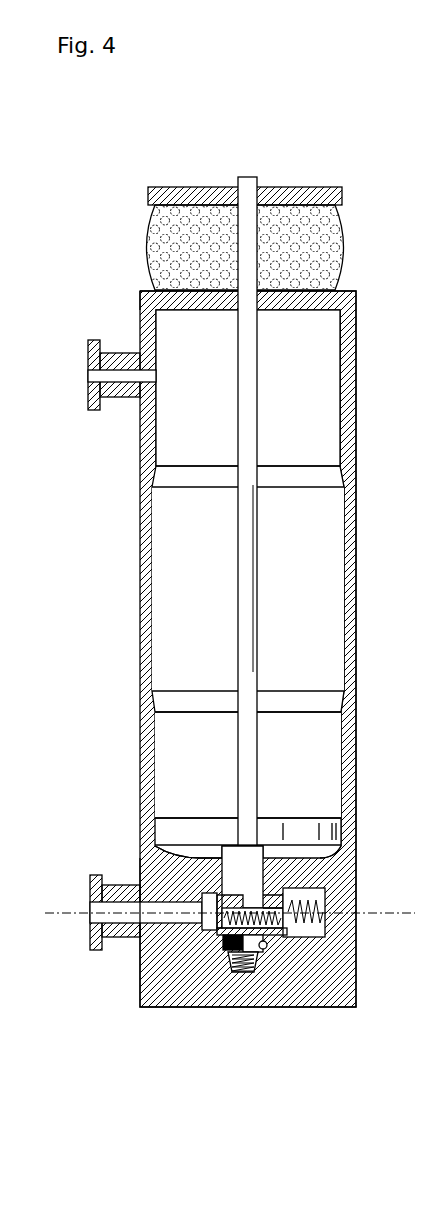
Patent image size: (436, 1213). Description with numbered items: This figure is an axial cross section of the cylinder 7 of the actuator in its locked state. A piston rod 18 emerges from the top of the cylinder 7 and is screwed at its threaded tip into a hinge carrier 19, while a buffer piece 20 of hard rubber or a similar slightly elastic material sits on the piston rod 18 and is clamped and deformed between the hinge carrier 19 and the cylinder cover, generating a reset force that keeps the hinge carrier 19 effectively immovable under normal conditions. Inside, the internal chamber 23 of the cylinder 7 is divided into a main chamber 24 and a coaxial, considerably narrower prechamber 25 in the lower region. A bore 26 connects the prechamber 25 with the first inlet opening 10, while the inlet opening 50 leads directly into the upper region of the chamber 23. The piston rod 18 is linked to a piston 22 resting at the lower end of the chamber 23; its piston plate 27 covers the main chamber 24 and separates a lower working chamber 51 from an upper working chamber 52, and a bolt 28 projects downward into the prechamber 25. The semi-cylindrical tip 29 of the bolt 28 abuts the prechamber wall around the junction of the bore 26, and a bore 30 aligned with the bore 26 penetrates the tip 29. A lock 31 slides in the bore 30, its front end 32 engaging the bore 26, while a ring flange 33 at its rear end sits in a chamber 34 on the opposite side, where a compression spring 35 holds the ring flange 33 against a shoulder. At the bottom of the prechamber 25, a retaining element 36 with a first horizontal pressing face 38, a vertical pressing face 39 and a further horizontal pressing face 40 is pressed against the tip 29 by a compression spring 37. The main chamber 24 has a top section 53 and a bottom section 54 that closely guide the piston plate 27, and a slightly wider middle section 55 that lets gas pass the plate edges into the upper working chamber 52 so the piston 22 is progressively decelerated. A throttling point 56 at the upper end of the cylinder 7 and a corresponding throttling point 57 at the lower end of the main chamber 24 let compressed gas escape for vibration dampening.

The cylinder 7 is at (124, 448).
The first inlet opening 10 is at (92, 907).
The piston rod 18 is at (247, 418).
The hinge carrier 19 is at (315, 188).
The buffer piece 20 is at (333, 257).
The piston 22 is at (317, 804).
The internal chamber 23 is at (315, 764).
The main chamber 24 is at (176, 727).
The prechamber 25 is at (222, 892).
The bore 26 is at (148, 918).
The piston plate 27 is at (187, 830).
The bolt 28 is at (265, 867).
The tip 29 is at (225, 955).
The bore 30 is at (218, 898).
The lock 31 is at (272, 930).
The front end 32 is at (141, 972).
The ring flange 33 is at (305, 884).
The chamber 34 is at (316, 932).
The compression spring 35 is at (302, 928).
The retaining element 36 is at (240, 970).
The compression spring 37 is at (245, 972).
The first horizontal pressing face 38 is at (232, 952).
The vertical pressing face 39 is at (253, 952).
The further horizontal pressing face 40 is at (266, 949).
The inlet opening 50 is at (92, 374).
The lower working chamber 51 is at (330, 852).
The upper working chamber 52 is at (327, 648).
The top section 53 is at (227, 383).
The bottom section 54 is at (222, 794).
The middle section 55 is at (232, 611).
The throttling point 56 is at (350, 315).
The throttling point 57 is at (352, 857).